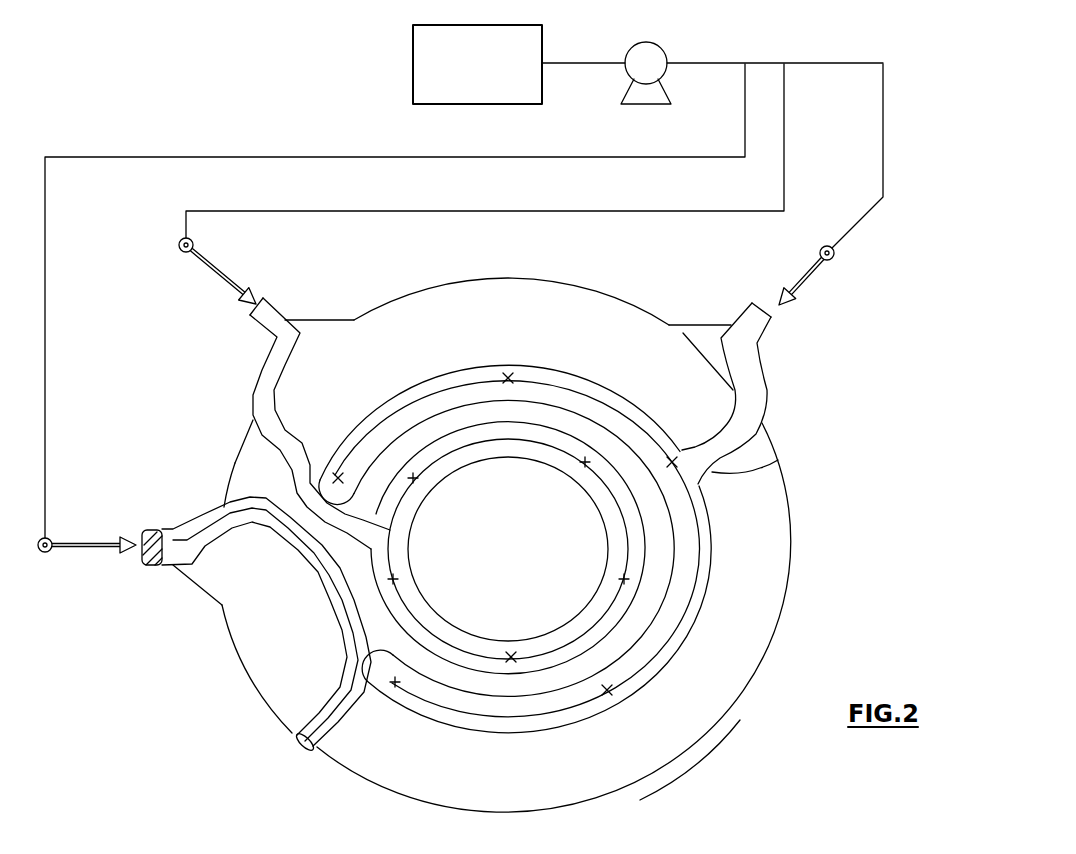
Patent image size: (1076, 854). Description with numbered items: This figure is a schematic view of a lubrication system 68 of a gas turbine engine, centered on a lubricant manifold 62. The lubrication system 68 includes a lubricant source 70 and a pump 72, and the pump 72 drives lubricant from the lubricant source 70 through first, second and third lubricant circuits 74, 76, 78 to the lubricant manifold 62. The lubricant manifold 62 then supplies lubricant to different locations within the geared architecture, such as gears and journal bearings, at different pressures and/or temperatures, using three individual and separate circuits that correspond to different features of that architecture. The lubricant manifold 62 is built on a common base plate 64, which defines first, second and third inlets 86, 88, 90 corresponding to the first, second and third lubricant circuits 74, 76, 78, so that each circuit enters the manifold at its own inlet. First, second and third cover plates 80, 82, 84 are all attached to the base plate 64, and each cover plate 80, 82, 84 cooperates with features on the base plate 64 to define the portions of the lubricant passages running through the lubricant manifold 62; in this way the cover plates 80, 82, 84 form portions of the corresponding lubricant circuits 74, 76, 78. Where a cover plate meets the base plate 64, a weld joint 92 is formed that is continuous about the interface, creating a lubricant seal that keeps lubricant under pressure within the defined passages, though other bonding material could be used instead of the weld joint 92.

The lubricant manifold 62 is at (796, 525).
The base plate 64 is at (680, 705).
The lubrication system 68 is at (970, 357).
The lubricant source 70 is at (462, 77).
The pump 72 is at (655, 56).
The first lubricant circuit 74 is at (884, 170).
The second lubricant circuit 76 is at (702, 211).
The third lubricant circuit 78 is at (593, 155).
The first cover plate 80 is at (762, 463).
The second cover plate 82 is at (455, 640).
The third cover plate 84 is at (357, 637).
The first inlet 86 is at (793, 322).
The second inlet 88 is at (236, 312).
The third inlet 90 is at (130, 568).
The weld joint 92 is at (592, 712).